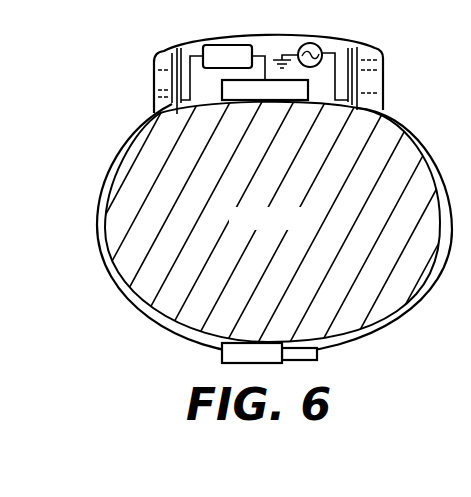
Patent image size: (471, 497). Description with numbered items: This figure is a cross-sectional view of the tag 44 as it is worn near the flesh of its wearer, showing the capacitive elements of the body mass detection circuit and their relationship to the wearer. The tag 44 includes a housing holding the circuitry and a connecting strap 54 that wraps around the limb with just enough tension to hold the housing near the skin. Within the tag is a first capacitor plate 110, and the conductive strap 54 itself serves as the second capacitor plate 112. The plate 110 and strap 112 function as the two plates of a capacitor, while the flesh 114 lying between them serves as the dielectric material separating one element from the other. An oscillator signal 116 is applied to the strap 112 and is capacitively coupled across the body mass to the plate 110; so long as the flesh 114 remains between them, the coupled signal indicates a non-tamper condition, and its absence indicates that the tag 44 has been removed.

The tag 44 is at (188, 47).
The oscillator signal 116 is at (337, 31).
The second capacitor plate 112 is at (134, 132).
The first capacitor plate 110 is at (236, 104).
The flesh 114 is at (386, 142).
The connecting strap 54 is at (425, 145).